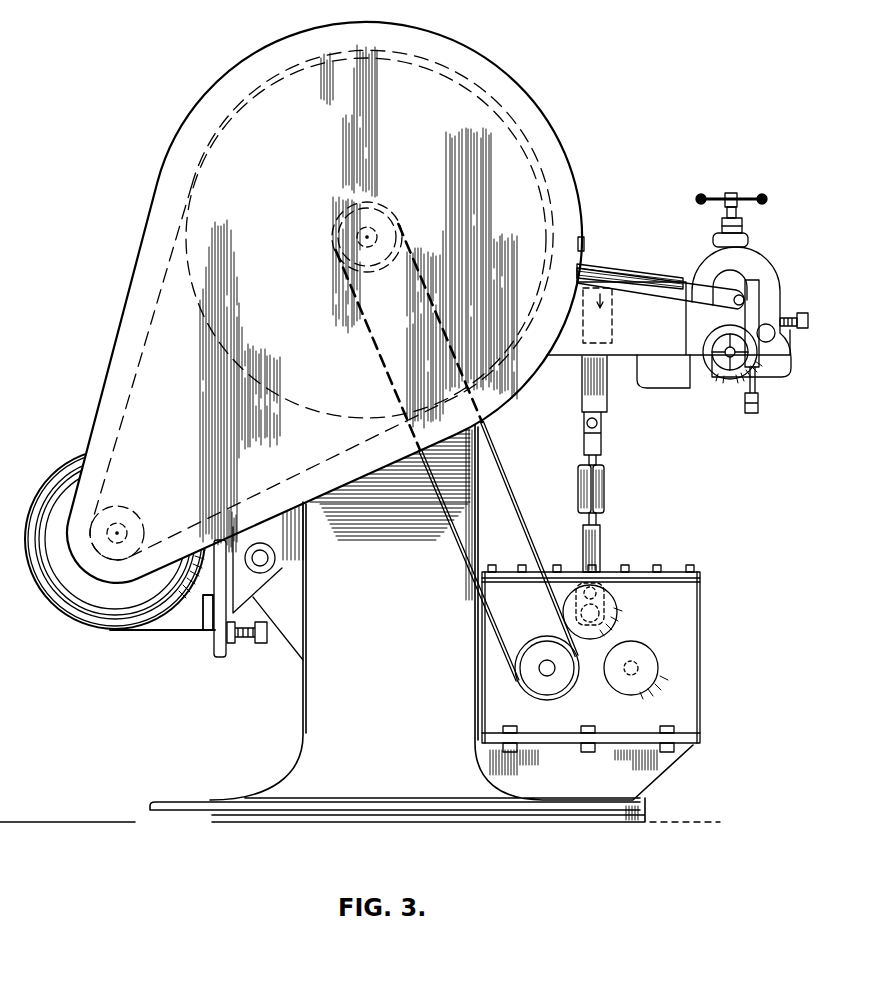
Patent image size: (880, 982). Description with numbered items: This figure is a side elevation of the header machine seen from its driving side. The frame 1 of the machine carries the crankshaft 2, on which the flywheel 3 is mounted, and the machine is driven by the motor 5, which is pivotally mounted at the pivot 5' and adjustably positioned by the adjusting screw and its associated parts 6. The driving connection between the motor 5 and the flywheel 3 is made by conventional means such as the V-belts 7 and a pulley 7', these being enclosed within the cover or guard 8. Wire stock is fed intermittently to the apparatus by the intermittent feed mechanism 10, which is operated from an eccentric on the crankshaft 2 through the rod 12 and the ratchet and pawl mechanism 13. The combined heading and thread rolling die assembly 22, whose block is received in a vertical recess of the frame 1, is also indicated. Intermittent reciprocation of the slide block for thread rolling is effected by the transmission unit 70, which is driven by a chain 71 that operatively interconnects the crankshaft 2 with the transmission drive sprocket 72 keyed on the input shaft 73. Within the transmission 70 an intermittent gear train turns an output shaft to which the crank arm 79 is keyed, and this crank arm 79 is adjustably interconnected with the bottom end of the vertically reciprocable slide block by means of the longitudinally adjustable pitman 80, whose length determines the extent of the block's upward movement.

The frame 1 is at (567, 350).
The crankshaft 2 is at (378, 236).
The flywheel 3 is at (207, 322).
The motor 5 is at (120, 558).
The pivotal mounting 5' is at (266, 585).
The adjusting screw and associated parts 6 is at (247, 643).
The V-belts 7 is at (321, 305).
The idler pulley 7' is at (135, 532).
The cover or guard 8 is at (114, 350).
The intermittent feed mechanism 10 is at (758, 268).
The rod 12 is at (651, 291).
The ratchet and pawl mechanism 13 is at (716, 366).
The combined heading and thread rolling die assembly 22 is at (609, 272).
The transmission unit 70 is at (698, 659).
The chain 71 is at (521, 487).
The transmission drive sprocket 72 is at (527, 660).
The input shaft 73 is at (542, 671).
The crank arm 79 is at (606, 609).
The pitman 80 is at (604, 498).